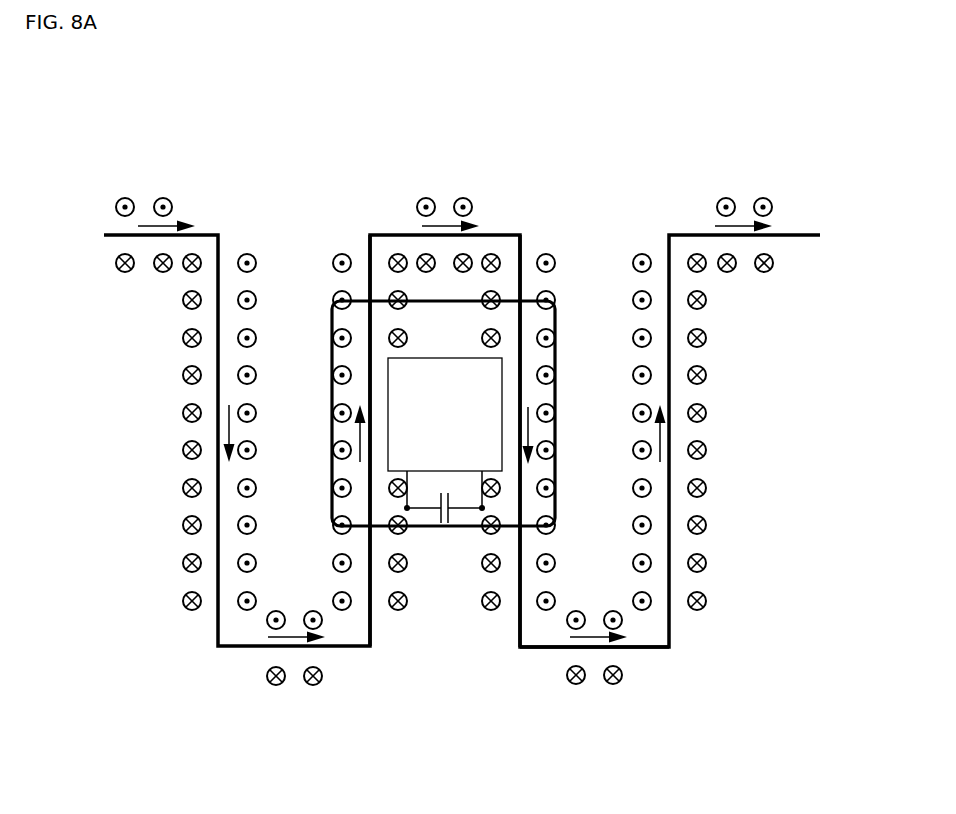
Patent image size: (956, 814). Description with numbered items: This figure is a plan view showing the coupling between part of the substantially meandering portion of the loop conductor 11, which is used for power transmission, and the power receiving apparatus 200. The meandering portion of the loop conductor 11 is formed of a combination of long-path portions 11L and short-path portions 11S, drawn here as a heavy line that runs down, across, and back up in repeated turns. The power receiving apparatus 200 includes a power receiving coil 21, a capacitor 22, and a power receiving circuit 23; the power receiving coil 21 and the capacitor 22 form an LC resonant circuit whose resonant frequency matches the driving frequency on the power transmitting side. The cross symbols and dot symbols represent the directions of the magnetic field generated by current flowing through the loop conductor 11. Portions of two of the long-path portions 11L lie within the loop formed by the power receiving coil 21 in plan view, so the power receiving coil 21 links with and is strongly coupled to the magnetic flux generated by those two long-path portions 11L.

The loop conductor 11 is at (462, 449).
The long-path portions 11L is at (518, 580).
The short-path portions 11S is at (652, 650).
The power receiving apparatus 200 is at (447, 400).
The power receiving coil 21 is at (559, 360).
The capacitor 22 is at (445, 530).
The power receiving circuit 23 is at (438, 358).